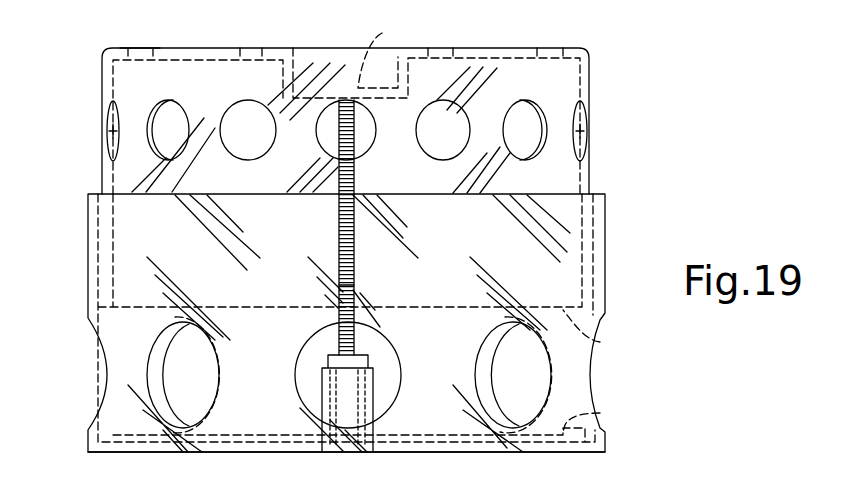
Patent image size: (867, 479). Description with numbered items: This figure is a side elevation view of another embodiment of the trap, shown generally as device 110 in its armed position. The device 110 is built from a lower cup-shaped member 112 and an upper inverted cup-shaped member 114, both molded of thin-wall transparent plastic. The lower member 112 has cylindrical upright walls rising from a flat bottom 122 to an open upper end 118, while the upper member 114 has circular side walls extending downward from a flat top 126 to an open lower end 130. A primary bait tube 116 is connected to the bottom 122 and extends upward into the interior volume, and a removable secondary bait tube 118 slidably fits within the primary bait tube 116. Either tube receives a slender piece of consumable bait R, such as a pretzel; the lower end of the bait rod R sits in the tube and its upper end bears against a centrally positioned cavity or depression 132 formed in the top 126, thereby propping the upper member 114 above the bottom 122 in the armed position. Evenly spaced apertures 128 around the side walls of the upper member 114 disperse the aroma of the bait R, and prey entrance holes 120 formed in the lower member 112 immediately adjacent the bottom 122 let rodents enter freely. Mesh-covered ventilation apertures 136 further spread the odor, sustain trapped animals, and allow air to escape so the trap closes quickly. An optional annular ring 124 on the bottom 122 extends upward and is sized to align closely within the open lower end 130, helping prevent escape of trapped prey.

The trap device 110 is at (645, 250).
The lower cup-shaped member 112 is at (607, 210).
The upper inverted cup-shaped member 114 is at (590, 95).
The primary bait tube 116 is at (373, 378).
The secondary bait tube 118 is at (589, 185).
The prey entrance holes 120 is at (545, 378).
The flat bottom 122 is at (575, 452).
The annular ring 124 is at (600, 413).
The flat top 126 is at (528, 47).
The apertures 128 is at (586, 129).
The open lower end 130 is at (600, 342).
The cavity or depression 132 is at (382, 33).
The ventilation apertures 136 is at (140, 47).
The bait rod R is at (348, 290).